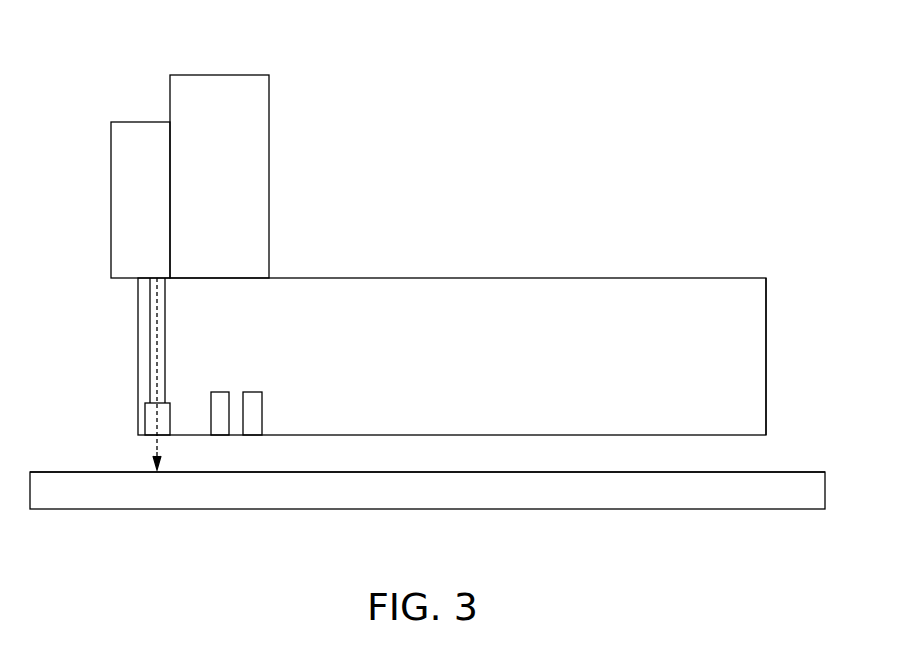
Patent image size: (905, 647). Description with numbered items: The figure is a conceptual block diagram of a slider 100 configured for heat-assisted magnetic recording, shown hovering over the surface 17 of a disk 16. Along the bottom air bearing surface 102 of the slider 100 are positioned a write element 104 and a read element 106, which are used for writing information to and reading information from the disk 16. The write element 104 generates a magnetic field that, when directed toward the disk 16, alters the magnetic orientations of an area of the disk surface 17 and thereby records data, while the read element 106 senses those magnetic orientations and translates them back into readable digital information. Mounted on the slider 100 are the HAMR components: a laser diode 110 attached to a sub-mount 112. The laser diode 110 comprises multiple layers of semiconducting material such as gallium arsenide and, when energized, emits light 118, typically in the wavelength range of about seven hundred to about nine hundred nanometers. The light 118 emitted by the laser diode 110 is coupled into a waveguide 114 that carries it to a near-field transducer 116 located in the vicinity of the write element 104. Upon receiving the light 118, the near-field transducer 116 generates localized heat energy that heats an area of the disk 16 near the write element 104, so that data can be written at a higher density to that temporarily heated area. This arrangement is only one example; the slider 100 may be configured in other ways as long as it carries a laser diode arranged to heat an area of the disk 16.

The disk 16 is at (428, 511).
The disk surface 17 is at (48, 470).
The slider 100 is at (452, 277).
The air bearing surface 102 is at (767, 357).
The write element 104 is at (220, 391).
The read element 106 is at (263, 410).
The laser diode 110 is at (141, 121).
The sub-mount 112 is at (220, 74).
The waveguide 114 is at (168, 300).
The near-field transducer 116 is at (144, 415).
The light 118 is at (156, 352).